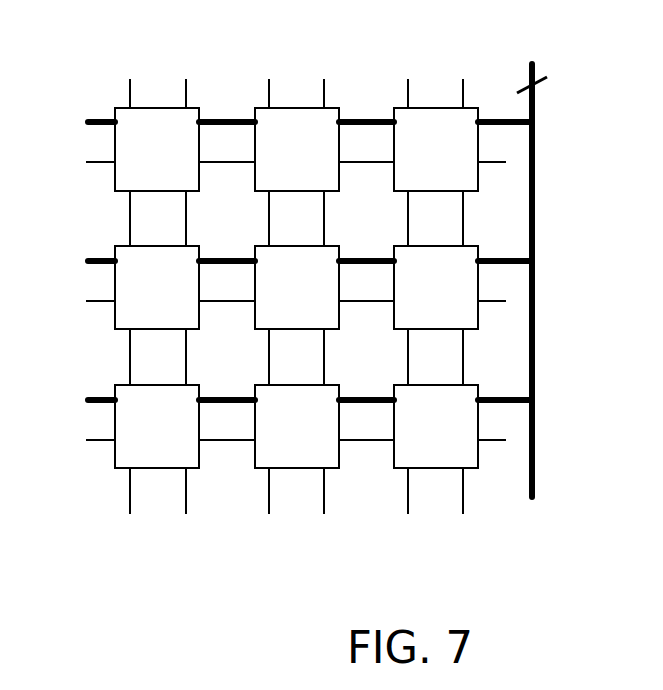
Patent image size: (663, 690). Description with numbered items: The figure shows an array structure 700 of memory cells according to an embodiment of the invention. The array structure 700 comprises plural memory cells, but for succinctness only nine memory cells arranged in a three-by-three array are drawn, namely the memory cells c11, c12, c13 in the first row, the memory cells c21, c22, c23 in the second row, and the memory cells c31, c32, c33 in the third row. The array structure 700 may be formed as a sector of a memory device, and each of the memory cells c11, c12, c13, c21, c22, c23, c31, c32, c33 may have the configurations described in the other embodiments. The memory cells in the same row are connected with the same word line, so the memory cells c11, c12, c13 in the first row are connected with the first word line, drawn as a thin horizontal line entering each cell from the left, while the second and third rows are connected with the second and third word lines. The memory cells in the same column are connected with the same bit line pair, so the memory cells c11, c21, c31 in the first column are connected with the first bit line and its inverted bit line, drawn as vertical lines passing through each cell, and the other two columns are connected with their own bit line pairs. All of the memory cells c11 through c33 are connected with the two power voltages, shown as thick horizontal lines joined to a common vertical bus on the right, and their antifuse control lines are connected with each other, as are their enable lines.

The array structure 700 is at (329, 335).
The memory cell c11 is at (157, 149).
The memory cell c12 is at (297, 149).
The memory cell c13 is at (436, 149).
The memory cell c21 is at (157, 287).
The memory cell c22 is at (297, 287).
The memory cell c23 is at (436, 287).
The memory cell c31 is at (157, 426).
The memory cell c32 is at (297, 426).
The memory cell c33 is at (436, 426).